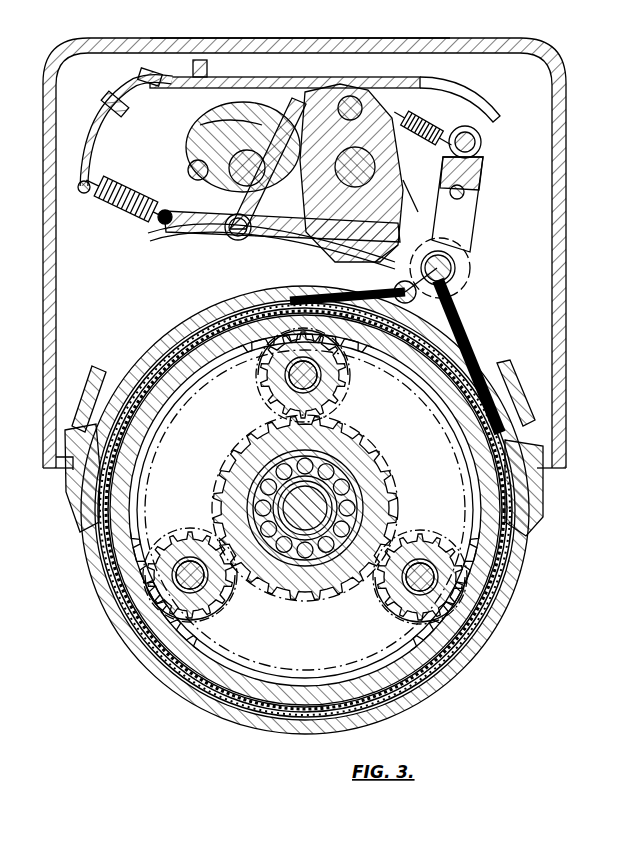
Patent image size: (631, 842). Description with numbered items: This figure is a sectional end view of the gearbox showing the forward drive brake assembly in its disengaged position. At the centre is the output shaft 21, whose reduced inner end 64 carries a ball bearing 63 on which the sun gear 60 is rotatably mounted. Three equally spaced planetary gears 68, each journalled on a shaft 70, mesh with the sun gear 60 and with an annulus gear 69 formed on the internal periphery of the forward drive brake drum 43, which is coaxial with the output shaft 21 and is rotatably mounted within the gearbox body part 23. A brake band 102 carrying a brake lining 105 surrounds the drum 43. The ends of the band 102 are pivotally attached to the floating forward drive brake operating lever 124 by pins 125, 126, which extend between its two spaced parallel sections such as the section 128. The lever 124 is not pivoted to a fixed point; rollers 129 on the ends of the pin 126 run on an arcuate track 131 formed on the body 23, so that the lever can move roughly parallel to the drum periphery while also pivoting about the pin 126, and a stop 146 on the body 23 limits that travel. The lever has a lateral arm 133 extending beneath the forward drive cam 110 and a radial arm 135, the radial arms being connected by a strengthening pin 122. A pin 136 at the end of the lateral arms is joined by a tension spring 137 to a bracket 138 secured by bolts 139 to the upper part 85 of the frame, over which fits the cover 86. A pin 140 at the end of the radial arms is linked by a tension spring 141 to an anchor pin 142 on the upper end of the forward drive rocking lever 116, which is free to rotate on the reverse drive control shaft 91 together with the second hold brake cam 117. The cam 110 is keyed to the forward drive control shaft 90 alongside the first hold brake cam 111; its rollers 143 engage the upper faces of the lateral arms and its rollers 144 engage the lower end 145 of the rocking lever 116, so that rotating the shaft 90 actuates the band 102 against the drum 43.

The output shaft 21 is at (330, 512).
The gearbox body part 23 is at (246, 721).
The forward drive brake drum 43 is at (273, 693).
The sun gear 60 is at (380, 482).
The ball bearing 63 is at (325, 466).
The reduced inner end of output shaft 64 is at (345, 503).
The planetary gears 68 is at (332, 381).
The annulus gear 69 is at (238, 673).
The planetary gear shaft 70 is at (285, 376).
The upper part of frame 85 is at (340, 77).
The cover 86 is at (328, 38).
The forward drive control shaft 90 is at (222, 128).
The reverse drive control shaft 91 is at (336, 180).
The brake band 102 is at (216, 325).
The brake lining 105 is at (197, 333).
The forward drive cam 110 is at (228, 160).
The first hold brake cam 111 is at (196, 148).
The forward drive rocking lever 116 is at (290, 221).
The second hold brake cam 117 is at (403, 180).
The strengthening pin 122 is at (465, 192).
The forward drive brake operating lever 124 is at (482, 262).
The pin 125 is at (425, 245).
The pin 126 is at (452, 268).
The parallel section of operating lever 128 is at (456, 276).
The rollers 129 is at (418, 296).
The arcuate track 131 is at (143, 330).
The arm of operating lever 133 is at (290, 232).
The arm of operating lever 135 is at (483, 170).
The pin 136 is at (160, 222).
The tension spring 137 is at (124, 214).
The bracket 138 is at (89, 155).
The bolts 139 is at (137, 77).
The pin 140 is at (482, 142).
The tension spring 141 is at (424, 118).
The pin 142 is at (364, 110).
The rollers 143 is at (187, 172).
The rollers 144 is at (238, 236).
The lower end of rocking lever 145 is at (370, 250).
The stop 146 is at (514, 386).